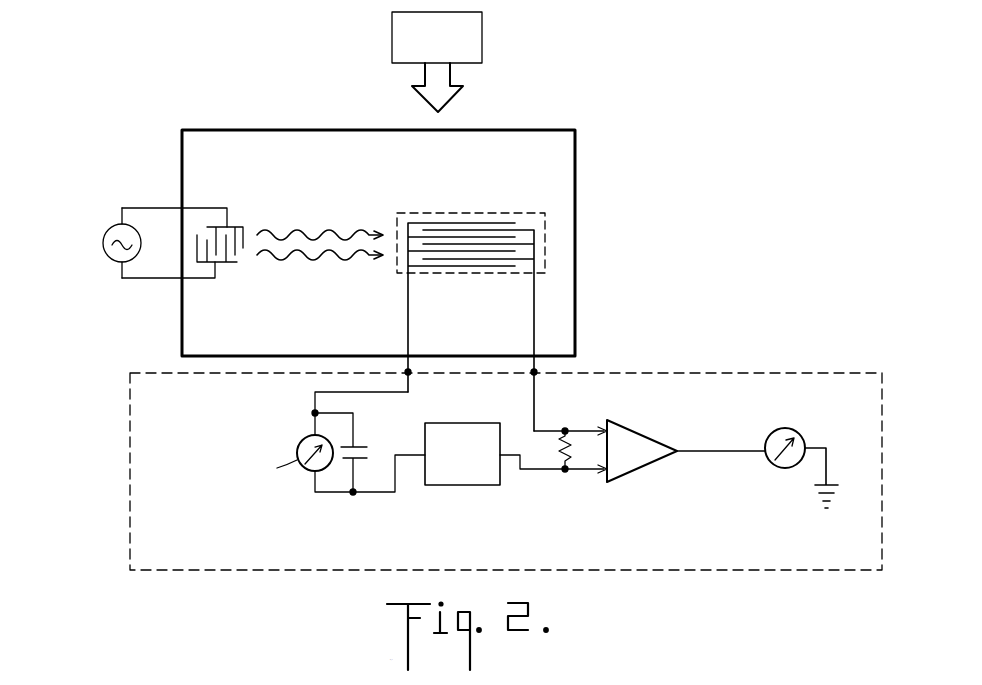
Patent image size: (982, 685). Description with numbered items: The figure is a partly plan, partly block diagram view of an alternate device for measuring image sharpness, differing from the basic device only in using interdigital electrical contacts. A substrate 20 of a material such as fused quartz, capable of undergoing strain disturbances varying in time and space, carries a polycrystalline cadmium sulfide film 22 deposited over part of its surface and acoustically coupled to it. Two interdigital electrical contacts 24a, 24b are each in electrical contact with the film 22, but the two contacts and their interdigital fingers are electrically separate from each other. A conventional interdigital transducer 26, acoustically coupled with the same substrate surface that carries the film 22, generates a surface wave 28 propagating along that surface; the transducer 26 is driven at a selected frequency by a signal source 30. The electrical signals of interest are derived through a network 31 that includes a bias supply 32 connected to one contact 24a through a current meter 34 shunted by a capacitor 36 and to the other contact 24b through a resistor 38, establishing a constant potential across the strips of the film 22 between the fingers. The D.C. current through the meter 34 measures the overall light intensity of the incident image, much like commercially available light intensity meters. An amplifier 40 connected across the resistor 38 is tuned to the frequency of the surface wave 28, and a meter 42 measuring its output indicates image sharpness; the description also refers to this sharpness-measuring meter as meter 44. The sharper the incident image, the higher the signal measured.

The substrate 20 is at (523, 137).
The film 22 is at (532, 207).
The interdigital electrical contact 24a is at (408, 325).
The interdigital electrical contact 24b is at (534, 322).
The interdigital transducer 26 is at (209, 212).
The surface wave 28 is at (308, 220).
The signal source 30 is at (103, 248).
The network 31 is at (137, 372).
The bias supply 32 is at (440, 485).
The current meter 34 is at (304, 470).
The capacitor 36 is at (378, 443).
The resistor 38 is at (569, 455).
The amplifier 40 is at (628, 467).
The meter 42 is at (770, 468).
The meter 44 is at (482, 53).